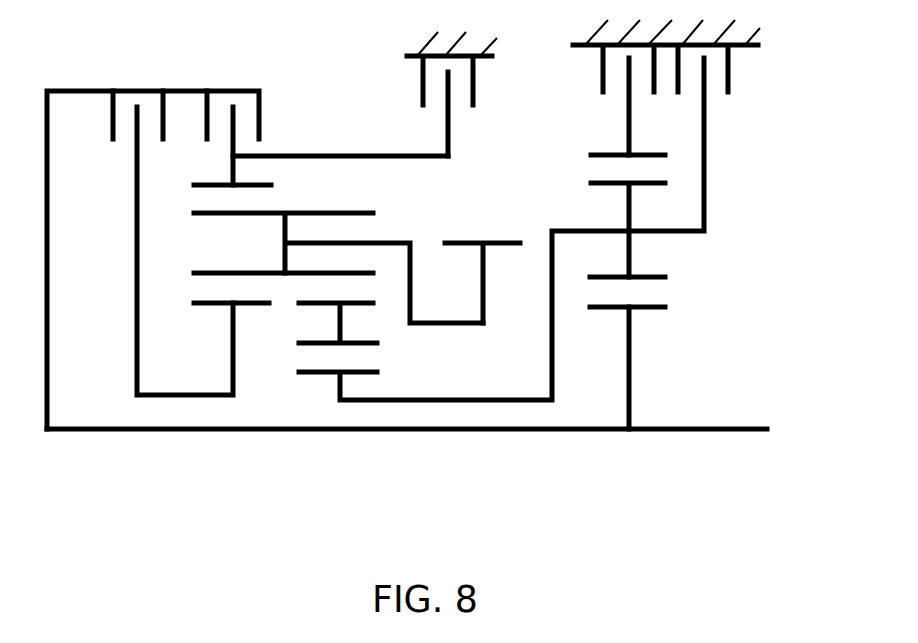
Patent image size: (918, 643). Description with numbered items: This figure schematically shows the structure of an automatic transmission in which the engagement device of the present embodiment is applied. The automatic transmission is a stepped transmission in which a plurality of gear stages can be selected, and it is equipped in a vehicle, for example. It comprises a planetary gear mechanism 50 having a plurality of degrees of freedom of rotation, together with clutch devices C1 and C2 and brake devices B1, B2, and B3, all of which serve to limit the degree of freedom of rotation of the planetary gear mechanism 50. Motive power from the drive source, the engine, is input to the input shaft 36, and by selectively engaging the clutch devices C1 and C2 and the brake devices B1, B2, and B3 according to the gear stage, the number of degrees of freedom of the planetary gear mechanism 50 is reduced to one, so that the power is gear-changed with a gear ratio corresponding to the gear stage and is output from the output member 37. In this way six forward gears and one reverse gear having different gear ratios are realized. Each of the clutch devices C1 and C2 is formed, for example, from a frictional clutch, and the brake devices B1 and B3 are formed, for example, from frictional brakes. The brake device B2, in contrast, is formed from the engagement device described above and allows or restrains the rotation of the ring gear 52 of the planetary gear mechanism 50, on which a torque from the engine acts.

The ring gear 52 is at (340, 154).
The output member 37 is at (497, 242).
The planetary gear mechanism 50 is at (677, 273).
The input shaft 36 is at (707, 432).
The clutch device C1 is at (134, 65).
The clutch device C2 is at (229, 65).
The brake device B1 is at (754, 72).
The brake device B2 is at (502, 107).
The brake device B3 is at (571, 72).